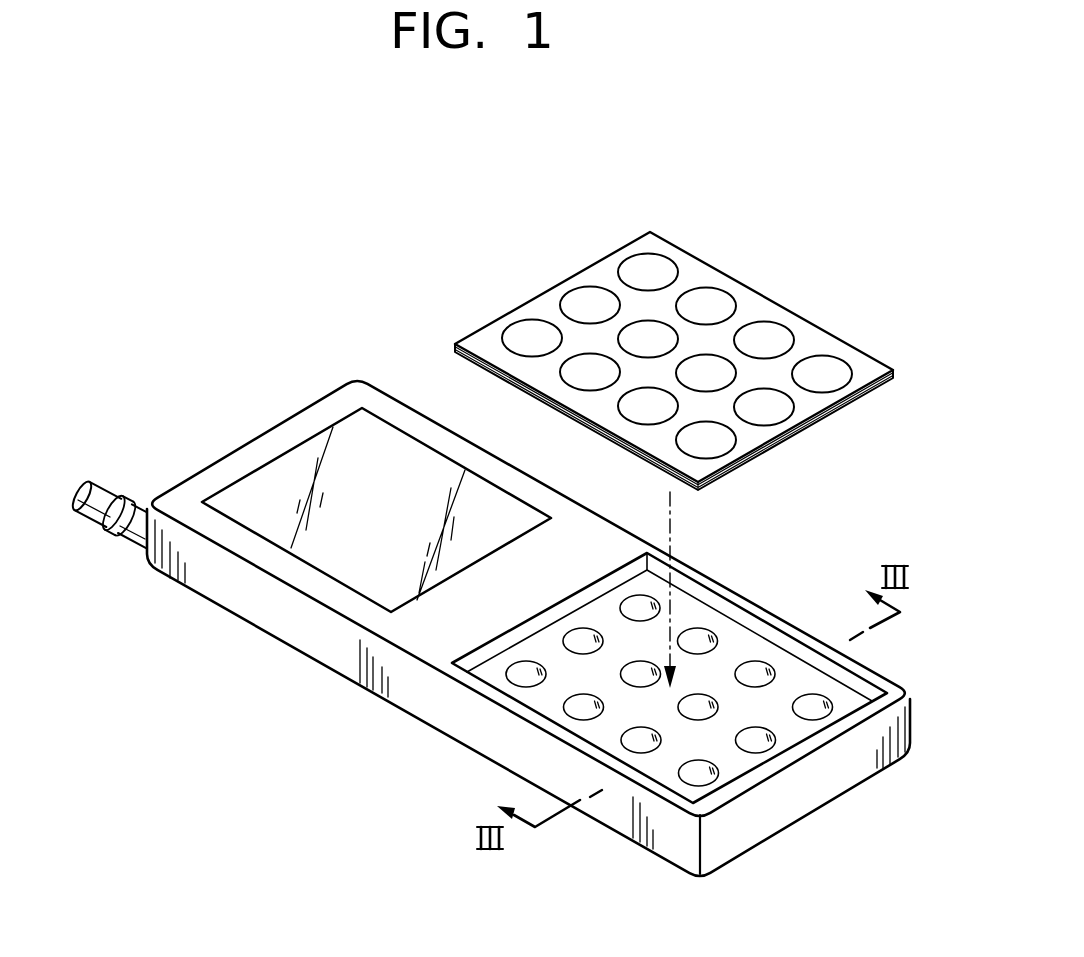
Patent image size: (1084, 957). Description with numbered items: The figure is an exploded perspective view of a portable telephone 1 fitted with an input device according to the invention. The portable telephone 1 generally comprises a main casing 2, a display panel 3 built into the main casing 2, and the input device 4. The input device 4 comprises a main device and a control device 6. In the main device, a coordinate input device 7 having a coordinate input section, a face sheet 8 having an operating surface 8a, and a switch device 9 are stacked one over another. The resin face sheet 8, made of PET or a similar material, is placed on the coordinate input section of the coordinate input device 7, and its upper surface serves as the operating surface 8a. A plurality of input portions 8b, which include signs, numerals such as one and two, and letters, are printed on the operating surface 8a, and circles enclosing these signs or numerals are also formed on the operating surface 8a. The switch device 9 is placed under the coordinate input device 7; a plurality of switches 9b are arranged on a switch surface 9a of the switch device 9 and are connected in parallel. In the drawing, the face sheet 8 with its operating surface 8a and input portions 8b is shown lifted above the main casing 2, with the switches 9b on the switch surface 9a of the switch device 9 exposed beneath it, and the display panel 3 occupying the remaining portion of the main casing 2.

The portable telephone 1 is at (334, 308).
The main casing 2 is at (295, 635).
The display panel 3 is at (293, 467).
The input device 4 is at (774, 289).
The control device 6 is at (593, 733).
The coordinate input device 7 is at (787, 440).
The face sheet 8 is at (608, 270).
The operating surface 8a is at (485, 343).
The input portions 8b is at (572, 288).
The switch device 9 is at (803, 727).
The switch surface 9a is at (540, 643).
The switches 9b is at (695, 636).